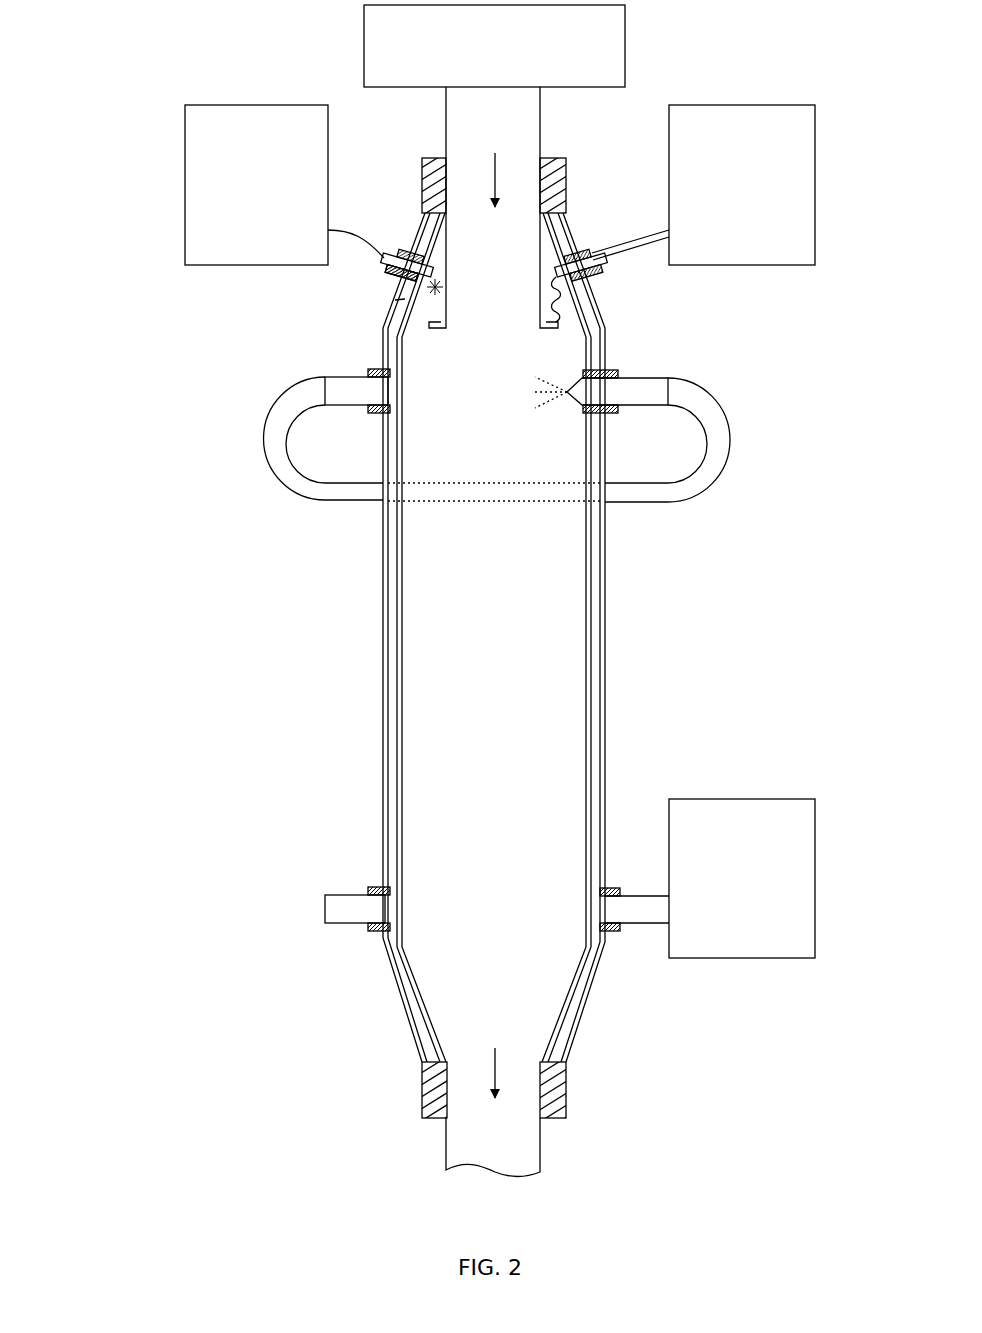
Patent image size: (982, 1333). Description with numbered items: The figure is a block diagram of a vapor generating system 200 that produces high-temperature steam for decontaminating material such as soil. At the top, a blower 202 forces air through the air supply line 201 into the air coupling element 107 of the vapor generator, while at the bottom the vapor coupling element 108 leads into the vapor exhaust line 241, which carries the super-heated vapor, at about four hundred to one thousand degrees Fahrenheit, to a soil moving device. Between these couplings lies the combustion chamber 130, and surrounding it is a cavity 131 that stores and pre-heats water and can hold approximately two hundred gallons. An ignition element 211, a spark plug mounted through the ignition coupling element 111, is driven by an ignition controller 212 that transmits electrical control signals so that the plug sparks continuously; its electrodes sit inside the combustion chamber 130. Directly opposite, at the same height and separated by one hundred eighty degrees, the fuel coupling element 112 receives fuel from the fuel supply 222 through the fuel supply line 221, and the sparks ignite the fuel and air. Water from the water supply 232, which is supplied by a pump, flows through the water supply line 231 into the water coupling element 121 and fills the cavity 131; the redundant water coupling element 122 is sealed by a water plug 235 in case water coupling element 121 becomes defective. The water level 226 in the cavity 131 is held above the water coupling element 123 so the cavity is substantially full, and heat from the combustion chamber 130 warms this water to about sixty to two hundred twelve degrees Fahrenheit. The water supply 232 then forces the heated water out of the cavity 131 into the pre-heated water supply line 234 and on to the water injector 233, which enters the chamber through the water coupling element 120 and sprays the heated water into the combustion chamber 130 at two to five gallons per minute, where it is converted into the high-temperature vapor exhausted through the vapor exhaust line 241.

The vapor generating system 200 is at (176, 69).
The blower 202 is at (494, 46).
The air supply line 201 is at (540, 140).
The air coupling element 107 is at (432, 172).
The ignition controller 212 is at (256, 185).
The ignition element 211 is at (387, 253).
The ignition coupling element 111 is at (393, 273).
The fuel supply line 221 is at (642, 240).
The fuel supply 222 is at (742, 185).
The fuel coupling element 112 is at (597, 275).
The water level 226 is at (393, 303).
The water injector 233 is at (643, 390).
The water coupling element 123 is at (373, 415).
The water coupling element 120 is at (610, 412).
The pre-heated water supply line 234 is at (302, 487).
The combustion chamber 130 is at (494, 521).
The cavity 131 is at (392, 613).
The water plug 235 is at (352, 903).
The water coupling element 122 is at (373, 935).
The water supply line 231 is at (652, 893).
The water coupling element 121 is at (618, 932).
The water supply 232 is at (742, 878).
The vapor coupling element 108 is at (423, 1087).
The vapor exhaust line 241 is at (520, 1137).